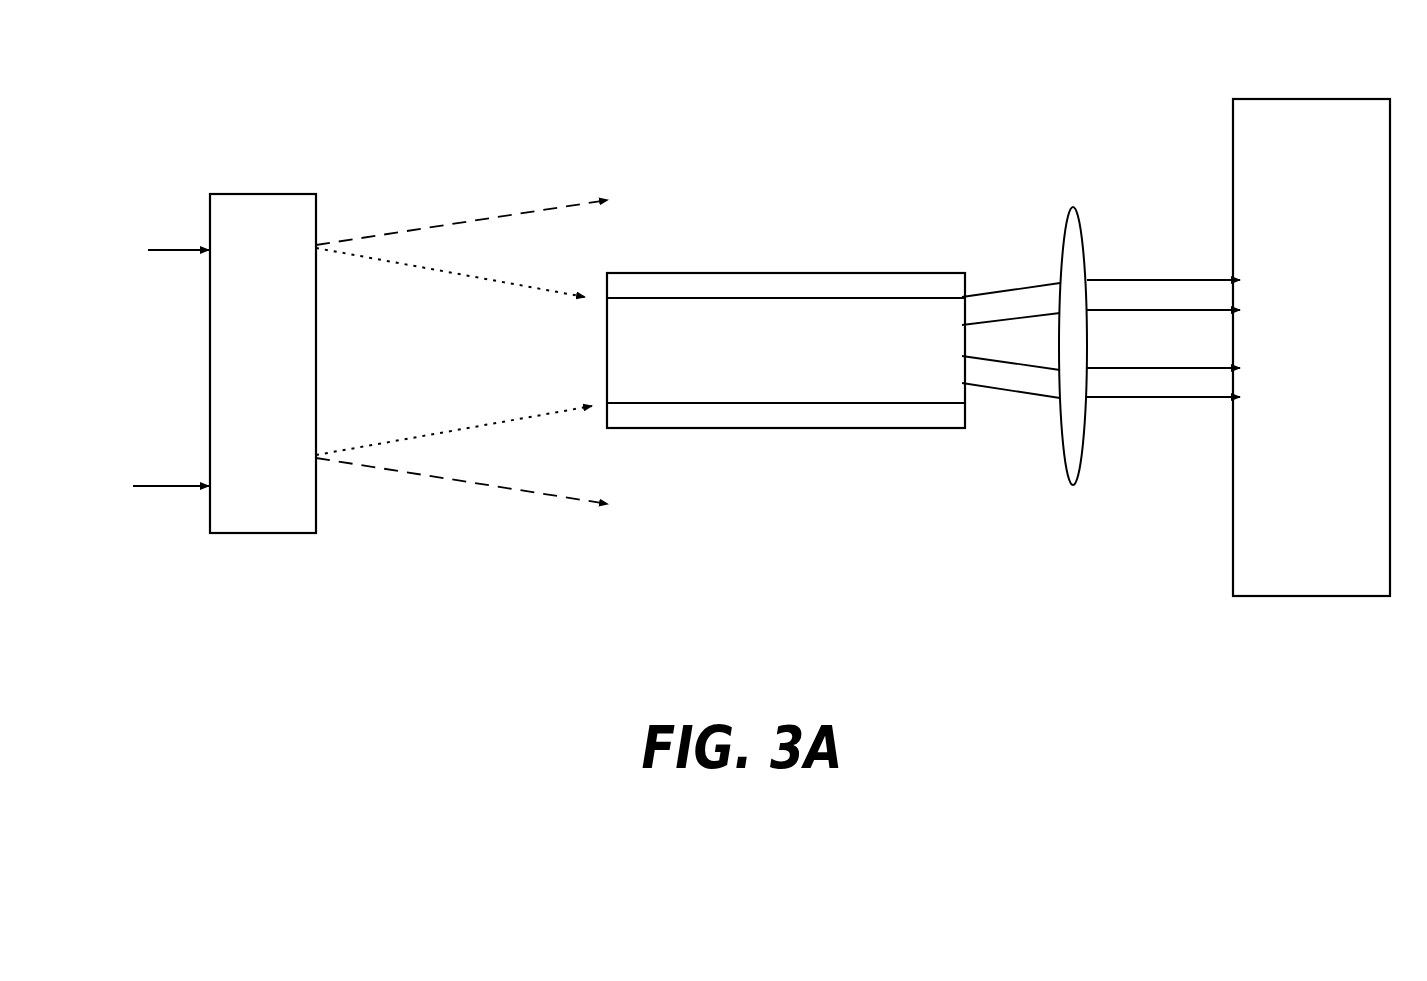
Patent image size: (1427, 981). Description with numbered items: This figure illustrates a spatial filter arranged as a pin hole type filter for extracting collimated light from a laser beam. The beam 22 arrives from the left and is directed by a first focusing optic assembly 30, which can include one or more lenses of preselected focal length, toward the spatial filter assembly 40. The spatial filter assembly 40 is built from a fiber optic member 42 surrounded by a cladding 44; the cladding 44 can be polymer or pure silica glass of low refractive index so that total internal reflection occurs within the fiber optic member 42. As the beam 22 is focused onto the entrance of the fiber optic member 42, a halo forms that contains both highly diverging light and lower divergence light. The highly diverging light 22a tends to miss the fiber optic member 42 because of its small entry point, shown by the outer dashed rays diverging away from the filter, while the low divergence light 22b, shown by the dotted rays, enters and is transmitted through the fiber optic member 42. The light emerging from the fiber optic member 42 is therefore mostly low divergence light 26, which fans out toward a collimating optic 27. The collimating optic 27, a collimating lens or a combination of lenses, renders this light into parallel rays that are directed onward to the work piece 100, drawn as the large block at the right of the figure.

The beam 22 is at (153, 252).
The highly diverging light 22a is at (520, 213).
The low divergence light 22b is at (492, 282).
The first focusing optic assembly 30 is at (290, 215).
The spatial filter assembly 40 is at (808, 272).
The fiber optic member 42 is at (733, 378).
The cladding 44 is at (650, 418).
The low divergence light 26 is at (1012, 285).
The collimating optic 27 is at (1073, 468).
The work piece 100 is at (1243, 125).